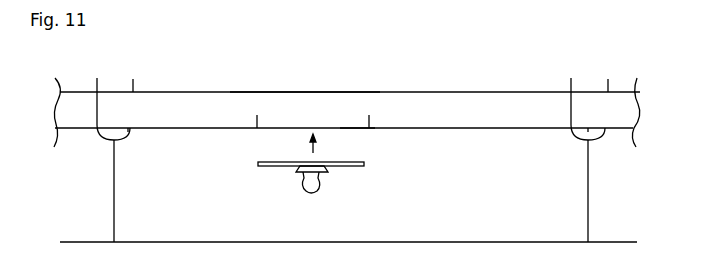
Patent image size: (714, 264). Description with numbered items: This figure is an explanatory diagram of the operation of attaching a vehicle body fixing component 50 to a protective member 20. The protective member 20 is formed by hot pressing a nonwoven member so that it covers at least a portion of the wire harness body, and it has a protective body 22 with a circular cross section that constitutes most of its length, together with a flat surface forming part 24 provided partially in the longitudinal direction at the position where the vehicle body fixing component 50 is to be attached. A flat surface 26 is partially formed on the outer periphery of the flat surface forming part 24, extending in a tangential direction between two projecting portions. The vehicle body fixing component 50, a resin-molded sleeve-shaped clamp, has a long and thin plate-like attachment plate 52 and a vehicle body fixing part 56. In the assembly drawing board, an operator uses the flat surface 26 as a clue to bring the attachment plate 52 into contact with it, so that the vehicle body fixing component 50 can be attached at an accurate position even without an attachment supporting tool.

The protective member 20 is at (453, 92).
The protective body 22 is at (179, 98).
The flat surface forming part 24 is at (302, 92).
The flat surface 26 is at (357, 128).
The vehicle body fixing component 50 is at (338, 182).
The attachment plate 52 is at (364, 165).
The vehicle body fixing part 56 is at (306, 180).